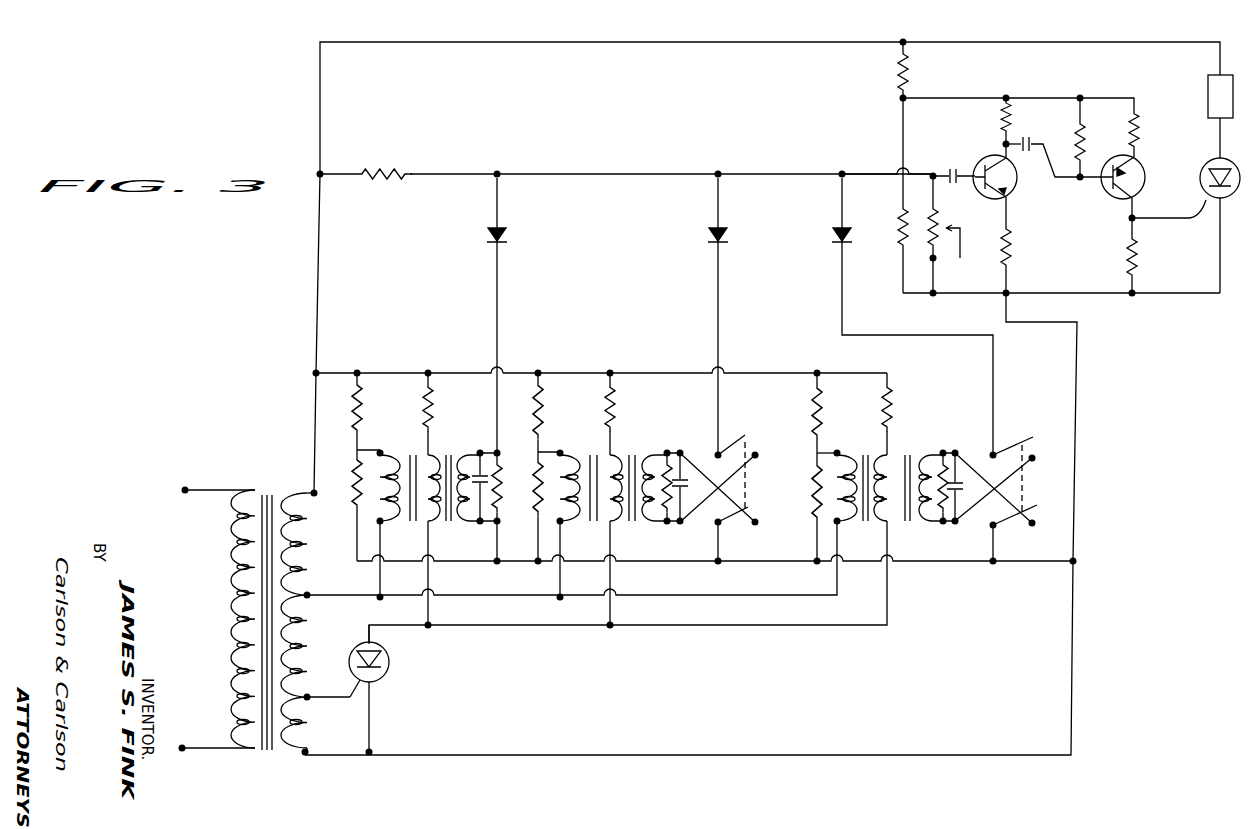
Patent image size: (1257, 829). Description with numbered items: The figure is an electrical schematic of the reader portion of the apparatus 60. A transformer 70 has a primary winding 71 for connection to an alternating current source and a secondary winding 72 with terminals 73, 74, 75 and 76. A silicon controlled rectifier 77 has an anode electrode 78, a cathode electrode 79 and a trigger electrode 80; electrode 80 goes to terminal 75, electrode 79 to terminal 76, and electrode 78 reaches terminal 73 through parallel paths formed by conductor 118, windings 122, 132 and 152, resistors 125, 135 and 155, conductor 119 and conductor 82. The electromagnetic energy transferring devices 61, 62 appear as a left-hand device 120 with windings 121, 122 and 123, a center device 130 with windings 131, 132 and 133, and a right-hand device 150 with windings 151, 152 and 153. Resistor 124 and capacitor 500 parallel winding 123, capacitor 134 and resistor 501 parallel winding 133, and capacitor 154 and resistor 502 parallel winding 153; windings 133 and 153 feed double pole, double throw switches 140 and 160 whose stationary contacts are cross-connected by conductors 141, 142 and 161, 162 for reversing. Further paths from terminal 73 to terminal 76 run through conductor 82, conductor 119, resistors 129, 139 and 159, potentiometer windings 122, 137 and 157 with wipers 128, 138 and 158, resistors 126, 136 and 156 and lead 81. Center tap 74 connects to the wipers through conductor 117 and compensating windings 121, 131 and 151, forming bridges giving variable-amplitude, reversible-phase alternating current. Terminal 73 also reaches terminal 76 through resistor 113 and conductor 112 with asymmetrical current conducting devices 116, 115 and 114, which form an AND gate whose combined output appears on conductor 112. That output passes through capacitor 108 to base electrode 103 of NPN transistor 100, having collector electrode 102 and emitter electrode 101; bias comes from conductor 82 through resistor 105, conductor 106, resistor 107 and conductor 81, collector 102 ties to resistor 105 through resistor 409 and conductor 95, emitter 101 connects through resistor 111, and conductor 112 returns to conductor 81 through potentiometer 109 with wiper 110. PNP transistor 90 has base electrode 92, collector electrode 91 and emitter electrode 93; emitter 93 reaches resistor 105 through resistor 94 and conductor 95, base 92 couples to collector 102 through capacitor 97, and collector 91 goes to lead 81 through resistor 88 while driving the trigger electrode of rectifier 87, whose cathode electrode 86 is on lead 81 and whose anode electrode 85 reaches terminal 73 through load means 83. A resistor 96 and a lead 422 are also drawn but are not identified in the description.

The apparatus 60 is at (670, 124).
The electromagnetic energy transferring device 61 is at (432, 354).
The electromagnetic energy transferring device 62 is at (656, 356).
The transformer 70 is at (244, 478).
The primary winding 71 is at (232, 550).
The secondary winding 72 is at (304, 548).
The terminal 73 is at (312, 488).
The terminal 74 is at (308, 592).
The terminal 75 is at (309, 694).
The terminal 76 is at (310, 757).
The current controlling device 77 is at (389, 662).
The anode electrode 78 is at (368, 628).
The cathode electrode 79 is at (372, 688).
The trigger electrode 80 is at (356, 708).
The conductor 81 is at (1102, 292).
The conductor 82 is at (639, 43).
The load means 83 is at (1204, 94).
The anode electrode 85 is at (1216, 150).
The cathode electrode 86 is at (1224, 196).
The current controlling device 87 is at (1200, 176).
The resistor 88 is at (1132, 258).
The current controlling device 90 is at (1136, 190).
The collector electrode 91 is at (1128, 212).
The base electrode 92 is at (1098, 184).
The emitter electrode 93 is at (1138, 148).
The resistor 94 is at (1140, 118).
The conductor 95 is at (1056, 98).
The resistor 96 is at (1080, 163).
The capacitor 97 is at (1026, 138).
The current controlling device 100 is at (1006, 180).
The emitter electrode 101 is at (1006, 200).
The collector electrode 102 is at (1006, 149).
The base electrode 103 is at (940, 240).
The resistor 105 is at (912, 68).
The conductor 106 is at (900, 174).
The resistor 107 is at (900, 230).
The capacitor 108 is at (948, 173).
The potentiometer 109 is at (933, 293).
The wiper 110 is at (966, 248).
The resistor 111 is at (1010, 244).
The conductor 112 is at (702, 174).
The resistor 113 is at (400, 174).
The asymmetrical current conducting device 114 is at (834, 234).
The asymmetrical current conducting device 115 is at (710, 232).
The asymmetrical current conducting device 116 is at (488, 236).
The conductor 117 is at (488, 595).
The conductor 118 is at (565, 625).
The conductor 119 is at (494, 370).
The electromagnetic energy transferring device 120 is at (407, 434).
The winding 121 is at (382, 522).
The winding 122 is at (432, 446).
The winding 123 is at (478, 522).
The resistor 124 is at (502, 492).
The resistor 125 is at (430, 410).
The resistor 126 is at (356, 490).
The wiper 128 is at (362, 442).
The resistor 129 is at (384, 352).
The electromagnetic energy transferring device 130 is at (597, 434).
The winding 131 is at (560, 526).
The winding 132 is at (620, 444).
The winding 133 is at (661, 526).
The capacitor 134 is at (670, 438).
The resistor 135 is at (610, 376).
The resistor 136 is at (538, 526).
The potentiometer winding 137 is at (534, 450).
The wiper 138 is at (549, 448).
The resistor 139 is at (538, 382).
The double pole, double throw switch 140 is at (746, 428).
The conductor 141 is at (708, 518).
The conductor 142 is at (719, 480).
The electromagnetic energy transferring device 150 is at (856, 424).
The winding 151 is at (810, 486).
The winding 152 is at (896, 454).
The winding 153 is at (946, 526).
The capacitor 154 is at (968, 468).
The resistor 155 is at (888, 412).
The resistor 156 is at (808, 518).
The potentiometer winding 157 is at (810, 454).
The wiper 158 is at (820, 430).
The resistor 159 is at (808, 406).
The double pole, double throw switch 160 is at (1016, 430).
The conductor 161 is at (972, 508).
The conductor 162 is at (1010, 526).
The resistor 409 is at (1000, 118).
The conductor 422 is at (352, 444).
The capacitor 500 is at (480, 526).
The resistor 501 is at (678, 452).
The resistor 502 is at (940, 450).